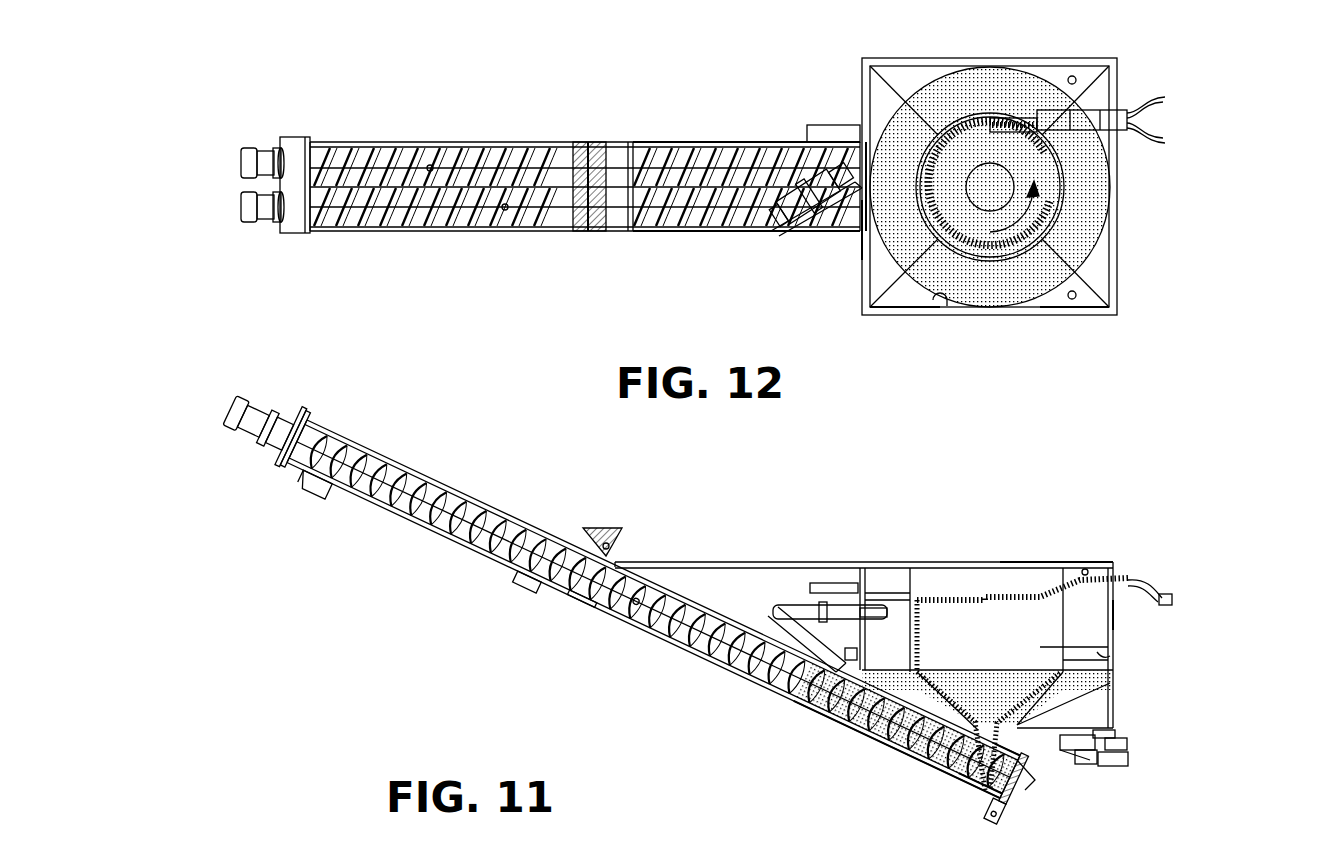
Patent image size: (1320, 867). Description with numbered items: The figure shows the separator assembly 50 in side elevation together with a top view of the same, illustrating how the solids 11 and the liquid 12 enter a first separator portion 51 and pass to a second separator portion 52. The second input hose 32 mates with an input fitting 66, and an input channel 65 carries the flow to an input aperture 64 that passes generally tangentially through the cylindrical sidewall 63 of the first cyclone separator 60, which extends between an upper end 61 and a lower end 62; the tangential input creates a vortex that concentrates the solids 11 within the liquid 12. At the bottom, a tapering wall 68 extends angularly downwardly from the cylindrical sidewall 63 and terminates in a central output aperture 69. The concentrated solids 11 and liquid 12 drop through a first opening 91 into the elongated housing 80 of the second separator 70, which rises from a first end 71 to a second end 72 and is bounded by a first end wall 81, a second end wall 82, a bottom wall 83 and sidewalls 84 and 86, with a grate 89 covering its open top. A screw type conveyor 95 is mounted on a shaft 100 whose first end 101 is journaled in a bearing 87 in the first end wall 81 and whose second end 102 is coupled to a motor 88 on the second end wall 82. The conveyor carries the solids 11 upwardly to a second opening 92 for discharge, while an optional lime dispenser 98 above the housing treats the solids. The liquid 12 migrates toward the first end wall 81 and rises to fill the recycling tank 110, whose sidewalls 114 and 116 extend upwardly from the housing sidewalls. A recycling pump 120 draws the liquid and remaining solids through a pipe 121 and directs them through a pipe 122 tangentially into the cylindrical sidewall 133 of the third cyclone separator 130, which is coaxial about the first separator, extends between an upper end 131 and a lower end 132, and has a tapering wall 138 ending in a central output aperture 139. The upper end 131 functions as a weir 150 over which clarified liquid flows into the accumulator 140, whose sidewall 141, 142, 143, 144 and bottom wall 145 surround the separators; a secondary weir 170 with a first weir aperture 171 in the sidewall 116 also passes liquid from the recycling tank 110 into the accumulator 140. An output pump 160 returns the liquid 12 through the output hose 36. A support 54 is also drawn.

In FIG. 12, the solids 11 is at (975, 262).
In FIG. 11, the solids 11 is at (973, 783).
In FIG. 12, the liquid 12 is at (1015, 290).
In FIG. 11, the liquid 12 is at (837, 727).
In FIG. 12, the second input hose 32 is at (1130, 130).
In FIG. 11, the second input hose 32 is at (1173, 603).
In FIG. 11, the output hose 36 is at (1130, 740).
In FIG. 12, the separator assembly 50 is at (905, 318).
In FIG. 11, the separator assembly 50 is at (1097, 565).
In FIG. 12, the first separator portion 51 is at (1085, 318).
In FIG. 11, the first separator portion 51 is at (1050, 565).
In FIG. 12, the second separator portion 52 is at (530, 142).
In FIG. 11, the second separator portion 52 is at (418, 468).
In FIG. 11, the support 54 is at (1017, 803).
In FIG. 12, the first cyclone separator 60 is at (1060, 187).
In FIG. 11, the first cyclone separator 60 is at (948, 578).
In FIG. 11, the upper end 61 is at (886, 565).
In FIG. 11, the lower end 62 is at (1085, 650).
In FIG. 12, the cylindrical sidewall 63 is at (1000, 232).
In FIG. 12, the input aperture 64 is at (995, 126).
In FIG. 11, the input aperture 64 is at (1005, 596).
In FIG. 12, the input channel 65 is at (1072, 78).
In FIG. 11, the input channel 65 is at (1090, 572).
In FIG. 12, the input fitting 66 is at (1130, 110).
In FIG. 11, the input fitting 66 is at (1137, 573).
In FIG. 11, the tapering wall 68 is at (1083, 707).
In FIG. 11, the central output aperture 69 is at (1117, 760).
In FIG. 12, the second separator 70 is at (365, 232).
In FIG. 11, the second separator 70 is at (478, 545).
In FIG. 11, the first end 71 is at (857, 760).
In FIG. 12, the second end 72 is at (365, 142).
In FIG. 11, the second end 72 is at (352, 505).
In FIG. 12, the elongated housing 80 is at (470, 232).
In FIG. 11, the elongated housing 80 is at (578, 606).
In FIG. 11, the first end wall 81 is at (1090, 760).
In FIG. 12, the second end wall 82 is at (293, 137).
In FIG. 11, the second end wall 82 is at (310, 412).
In FIG. 11, the bottom wall 83 is at (545, 606).
In FIG. 12, the sidewall 84 is at (430, 232).
In FIG. 12, the sidewall 86 is at (470, 142).
In FIG. 11, the bearing 87 is at (1003, 808).
In FIG. 12, the motor 88 is at (250, 132).
In FIG. 11, the motor 88 is at (232, 430).
In FIG. 11, the grate 89 is at (510, 528).
In FIG. 11, the first opening 91 is at (1095, 765).
In FIG. 11, the second opening 92 is at (305, 488).
In FIG. 12, the screw type conveyor 95 is at (436, 146).
In FIG. 11, the screw type conveyor 95 is at (403, 507).
In FIG. 12, the dispenser 98 is at (582, 232).
In FIG. 11, the dispenser 98 is at (600, 528).
In FIG. 12, the shaft 100 is at (505, 232).
In FIG. 11, the shaft 100 is at (637, 600).
In FIG. 11, the first end 101 is at (985, 800).
In FIG. 11, the second end 102 is at (300, 470).
In FIG. 12, the recycling tank 110 is at (705, 150).
In FIG. 11, the recycling tank 110 is at (738, 600).
In FIG. 12, the sidewall 114 is at (637, 232).
In FIG. 12, the sidewall 116 is at (633, 142).
In FIG. 12, the recycling pump 120 is at (800, 225).
In FIG. 11, the recycling pump 120 is at (713, 622).
In FIG. 12, the pipe 121 is at (790, 235).
In FIG. 11, the pipe 121 is at (770, 693).
In FIG. 12, the pipe 122 is at (862, 237).
In FIG. 11, the pipe 122 is at (857, 593).
In FIG. 12, the third cyclone separator 130 is at (1108, 280).
In FIG. 11, the third cyclone separator 130 is at (1112, 568).
In FIG. 11, the upper end 131 is at (1117, 612).
In FIG. 11, the lower end 132 is at (1103, 660).
In FIG. 12, the cylindrical sidewall 133 is at (947, 318).
In FIG. 11, the cylindrical sidewall 133 is at (1108, 660).
In FIG. 11, the tapering wall 138 is at (870, 770).
In FIG. 11, the central output aperture 139 is at (902, 753).
In FIG. 12, the accumulator 140 is at (1112, 307).
In FIG. 12, the sidewall 141 is at (1062, 318).
In FIG. 12, the sidewall 142 is at (860, 70).
In FIG. 12, the sidewall 143 is at (958, 58).
In FIG. 12, the sidewall 144 is at (1115, 165).
In FIG. 11, the bottom wall 145 is at (1117, 732).
In FIG. 12, the weir 150 is at (862, 300).
In FIG. 11, the weir 150 is at (860, 600).
In FIG. 11, the output pump 160 is at (1130, 773).
In FIG. 12, the secondary weir 170 is at (835, 125).
In FIG. 11, the first weir aperture 171 is at (832, 585).